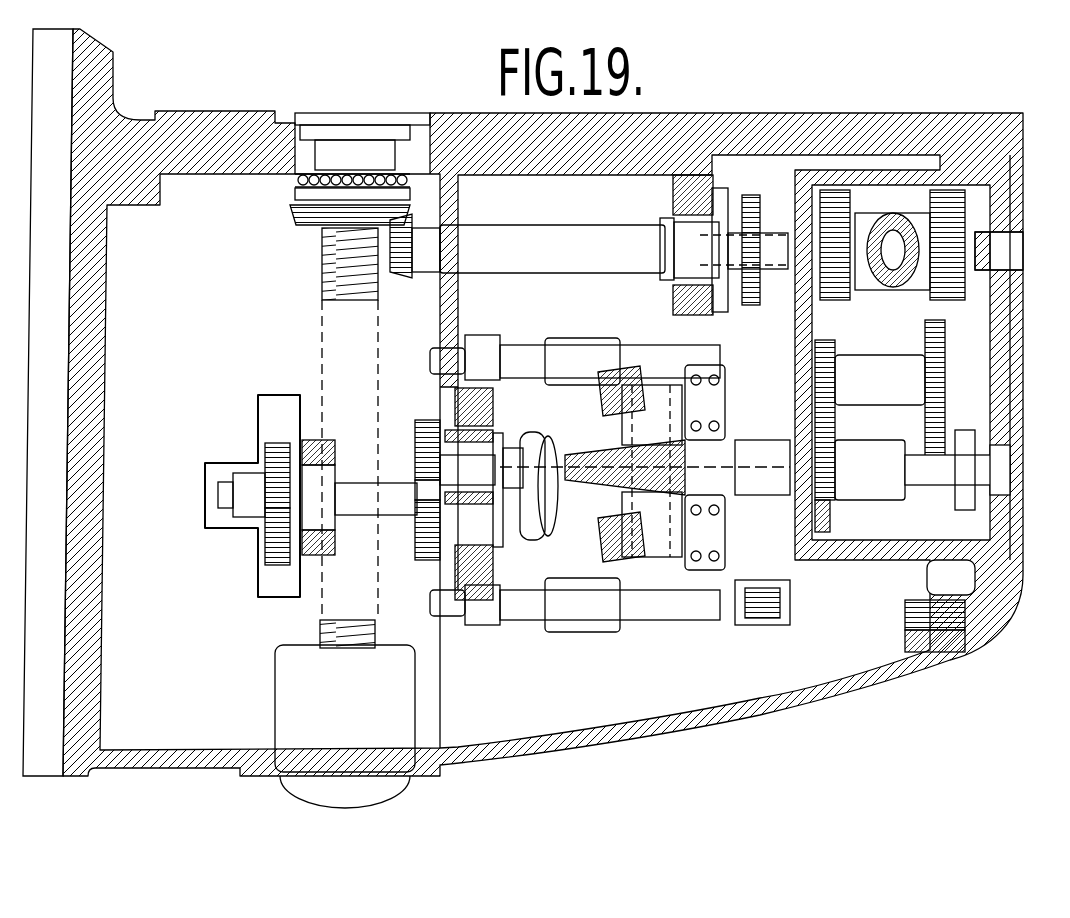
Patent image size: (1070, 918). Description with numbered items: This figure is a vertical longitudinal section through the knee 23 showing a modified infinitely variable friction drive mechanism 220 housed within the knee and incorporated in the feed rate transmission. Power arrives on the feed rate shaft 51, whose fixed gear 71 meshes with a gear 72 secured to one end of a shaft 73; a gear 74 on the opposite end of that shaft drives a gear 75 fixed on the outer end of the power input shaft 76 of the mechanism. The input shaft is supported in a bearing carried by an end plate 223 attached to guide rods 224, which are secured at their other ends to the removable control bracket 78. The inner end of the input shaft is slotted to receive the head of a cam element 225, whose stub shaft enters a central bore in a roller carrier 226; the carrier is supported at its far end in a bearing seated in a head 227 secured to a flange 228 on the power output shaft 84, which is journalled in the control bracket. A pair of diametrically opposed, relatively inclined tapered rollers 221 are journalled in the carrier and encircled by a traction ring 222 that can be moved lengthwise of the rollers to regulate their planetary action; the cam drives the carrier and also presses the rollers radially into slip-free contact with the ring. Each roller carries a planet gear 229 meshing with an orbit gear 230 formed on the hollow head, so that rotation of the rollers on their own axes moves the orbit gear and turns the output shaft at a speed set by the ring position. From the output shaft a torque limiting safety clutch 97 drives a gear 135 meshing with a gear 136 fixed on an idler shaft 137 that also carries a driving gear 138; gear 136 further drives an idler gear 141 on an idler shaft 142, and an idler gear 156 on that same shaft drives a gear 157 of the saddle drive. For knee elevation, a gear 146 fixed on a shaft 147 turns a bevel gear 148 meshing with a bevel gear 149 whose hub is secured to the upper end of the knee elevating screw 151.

The knee 23 is at (698, 720).
The feed rate shaft 51 is at (212, 482).
The gear 71 is at (280, 450).
The gear 72 is at (270, 532).
The shaft 73 is at (350, 512).
The gear 74 is at (425, 556).
The gear 75 is at (428, 422).
The power input shaft 76 is at (418, 460).
The control bracket 78 is at (1008, 568).
The power output shaft 84 is at (910, 476).
The torque limiting safety clutch 97 is at (888, 448).
The gear 135 is at (850, 485).
The gear 136 is at (838, 430).
The idler shaft 137 is at (880, 380).
The driving gear 138 is at (928, 374).
The idler gear 141 is at (835, 190).
The idler shaft 142 is at (1008, 235).
The gear 146 is at (750, 195).
The shaft 147 is at (582, 236).
The bevel gear 148 is at (400, 275).
The bevel gear 149 is at (310, 222).
The knee elevating screw 151 is at (330, 288).
The idler gear 156 is at (945, 190).
The gear 157 is at (932, 208).
The infinitely variable friction drive mechanism 220 is at (536, 335).
The tapered rollers 221 is at (620, 380).
The traction ring 222 is at (615, 412).
The end plate 223 is at (486, 626).
The guide rods 224 is at (654, 345).
The cam element 225 is at (556, 482).
The roller carrier 226 is at (695, 365).
The head 227 is at (745, 600).
The flange 228 is at (812, 518).
The planet gear 229 is at (622, 410).
The orbit gear 230 is at (703, 467).